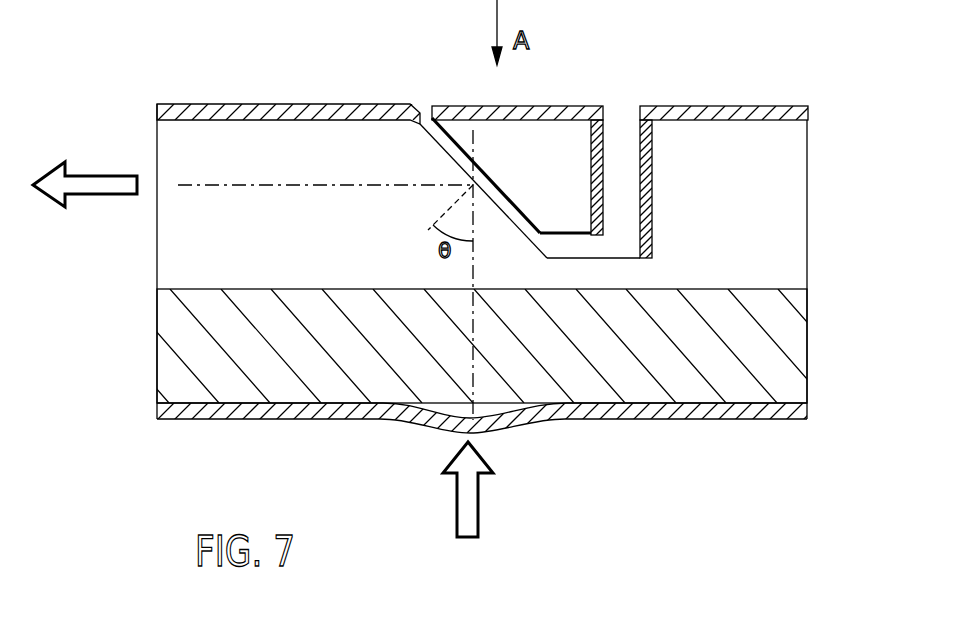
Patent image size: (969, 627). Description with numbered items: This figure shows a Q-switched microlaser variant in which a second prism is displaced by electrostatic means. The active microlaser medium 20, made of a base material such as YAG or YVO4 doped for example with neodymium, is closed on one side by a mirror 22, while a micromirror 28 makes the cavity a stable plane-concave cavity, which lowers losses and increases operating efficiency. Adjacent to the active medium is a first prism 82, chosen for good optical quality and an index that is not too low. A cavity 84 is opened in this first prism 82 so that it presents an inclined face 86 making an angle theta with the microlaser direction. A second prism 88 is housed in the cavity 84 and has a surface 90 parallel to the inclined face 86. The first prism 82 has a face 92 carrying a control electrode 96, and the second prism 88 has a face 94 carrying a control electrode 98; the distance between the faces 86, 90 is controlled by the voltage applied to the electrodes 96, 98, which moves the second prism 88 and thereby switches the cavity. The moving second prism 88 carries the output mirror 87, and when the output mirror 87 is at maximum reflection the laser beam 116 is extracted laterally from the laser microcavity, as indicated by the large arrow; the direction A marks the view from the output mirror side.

The laser beam 116 is at (90, 170).
The output mirror 87 is at (447, 112).
The second prism 88 is at (512, 128).
The cavity 84 is at (622, 128).
The surface 90 is at (440, 155).
The face 94 is at (600, 148).
The face 92 is at (645, 160).
The control electrode 98 is at (590, 203).
The control electrode 96 is at (647, 197).
The inclined face 86 is at (514, 212).
The first prism 82 is at (193, 250).
The active microlaser medium 20 is at (190, 345).
The mirror 22 is at (170, 405).
The micromirror 28 is at (508, 404).